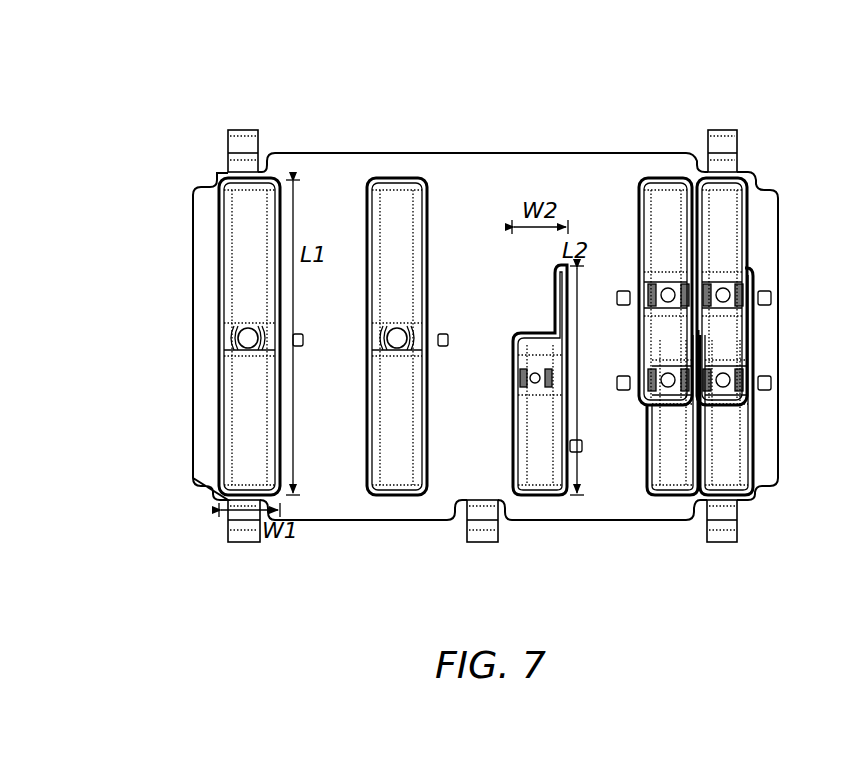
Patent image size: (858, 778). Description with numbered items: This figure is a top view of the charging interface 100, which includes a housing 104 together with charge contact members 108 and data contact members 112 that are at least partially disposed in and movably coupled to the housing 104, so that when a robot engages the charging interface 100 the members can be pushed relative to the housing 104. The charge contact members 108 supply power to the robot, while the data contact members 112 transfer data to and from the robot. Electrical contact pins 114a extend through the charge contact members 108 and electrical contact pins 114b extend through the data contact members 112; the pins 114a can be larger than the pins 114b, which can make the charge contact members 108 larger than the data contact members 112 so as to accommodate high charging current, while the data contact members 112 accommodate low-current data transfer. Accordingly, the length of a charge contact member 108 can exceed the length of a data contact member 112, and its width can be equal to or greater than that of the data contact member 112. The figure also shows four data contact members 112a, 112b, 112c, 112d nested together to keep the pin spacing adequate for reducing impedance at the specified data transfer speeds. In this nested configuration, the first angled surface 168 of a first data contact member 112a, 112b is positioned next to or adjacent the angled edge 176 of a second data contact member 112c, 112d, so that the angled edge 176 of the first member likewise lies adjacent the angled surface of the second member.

The charging interface 100 is at (617, 38).
The housing 104 is at (355, 128).
The charge contact member 108 is at (400, 175).
The data contact member 112 is at (540, 500).
The first data contact member 112a is at (661, 175).
The first data contact member 112b is at (712, 175).
The second data contact member 112c is at (670, 500).
The second data contact member 112d is at (724, 500).
The electrical contact pin of charge contact member 114a is at (235, 338).
The electrical contact pin of data contact member 114b is at (518, 378).
The first angled surface 168 is at (665, 210).
The angled edge 176 is at (692, 300).